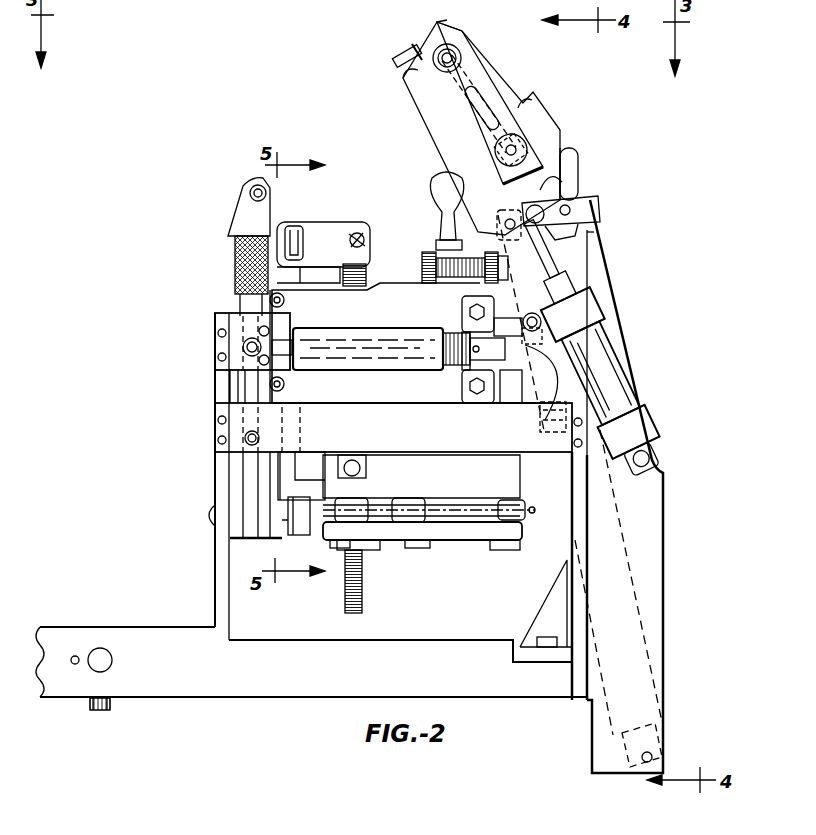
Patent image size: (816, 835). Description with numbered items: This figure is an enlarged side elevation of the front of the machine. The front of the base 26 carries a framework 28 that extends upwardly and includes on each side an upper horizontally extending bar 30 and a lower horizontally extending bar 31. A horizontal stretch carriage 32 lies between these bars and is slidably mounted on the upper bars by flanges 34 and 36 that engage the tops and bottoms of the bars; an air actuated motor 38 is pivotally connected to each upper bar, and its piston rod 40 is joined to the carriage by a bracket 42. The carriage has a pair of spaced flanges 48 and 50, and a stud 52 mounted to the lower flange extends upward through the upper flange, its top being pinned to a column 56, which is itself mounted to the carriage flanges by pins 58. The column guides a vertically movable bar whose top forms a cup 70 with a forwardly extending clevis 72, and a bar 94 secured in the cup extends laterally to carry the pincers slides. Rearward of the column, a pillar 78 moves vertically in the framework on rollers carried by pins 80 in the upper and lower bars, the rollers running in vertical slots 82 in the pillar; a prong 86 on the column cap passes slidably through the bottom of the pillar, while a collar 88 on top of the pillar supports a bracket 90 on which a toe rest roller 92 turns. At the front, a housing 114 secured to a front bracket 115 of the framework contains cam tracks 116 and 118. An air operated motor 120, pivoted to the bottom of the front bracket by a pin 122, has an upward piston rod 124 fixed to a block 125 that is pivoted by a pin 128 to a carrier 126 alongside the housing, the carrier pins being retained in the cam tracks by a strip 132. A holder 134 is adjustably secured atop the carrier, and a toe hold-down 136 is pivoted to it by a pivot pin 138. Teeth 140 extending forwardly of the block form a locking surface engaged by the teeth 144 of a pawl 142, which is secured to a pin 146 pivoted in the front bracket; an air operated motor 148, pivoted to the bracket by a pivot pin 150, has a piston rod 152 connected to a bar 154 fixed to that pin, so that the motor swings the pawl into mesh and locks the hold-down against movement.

The base 26 is at (222, 692).
The framework 28 is at (635, 296).
The upper horizontally extending bar 30 is at (598, 344).
The lower horizontally extending bar 31 is at (452, 443).
The horizontal stretch carriage 32 is at (505, 490).
The flange 34 is at (370, 285).
The flange 36 is at (364, 394).
The air actuated motor 38 is at (380, 342).
The piston rod 40 is at (465, 338).
The bracket 42 is at (468, 381).
The flange 48 is at (374, 486).
The flange 50 is at (390, 535).
The stud 52 is at (347, 593).
The column 56 is at (310, 493).
The pin 58 is at (285, 300).
The cup 70 is at (312, 228).
The clevis 72 is at (345, 232).
The pillar 78 is at (232, 481).
The pin 80 is at (245, 349).
The vertical slot 82 is at (250, 528).
The prong 86 is at (210, 520).
The collar 88 is at (236, 256).
The bracket 90 is at (240, 213).
The toe rest roller 92 is at (256, 183).
The bar 94 is at (292, 228).
The housing 114 is at (550, 128).
The front bracket 115 is at (580, 270).
The cam track 116 is at (532, 108).
The cam track 118 is at (420, 84).
The air operated motor 120 is at (625, 620).
The pin 122 is at (651, 755).
The piston rod 124 is at (548, 417).
The block 125 is at (545, 386).
The carrier 126 is at (552, 182).
The pin 128 is at (523, 318).
The strip 132 is at (480, 232).
The holder 134 is at (468, 62).
The toe hold-down 136 is at (400, 54).
The pivot pin 138 is at (433, 28).
The teeth 140 is at (608, 395).
The pawl 142 is at (575, 191).
The teeth 144 is at (565, 163).
The pin 146 is at (575, 210).
The air operated motor 148 is at (600, 365).
The pivot pin 150 is at (632, 430).
The piston rod 152 is at (568, 263).
The bar 154 is at (580, 222).